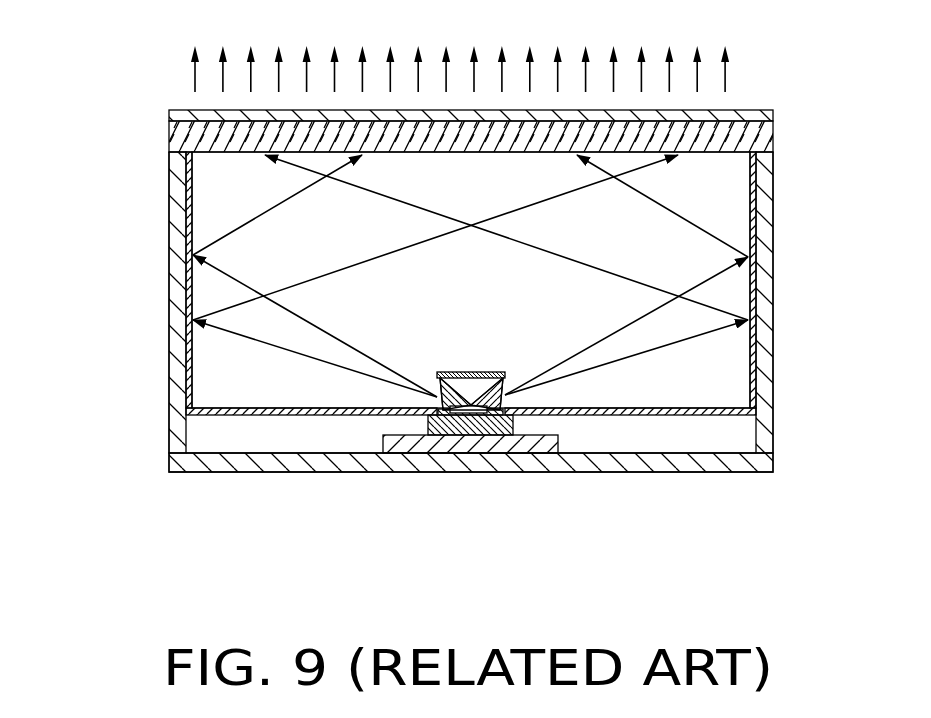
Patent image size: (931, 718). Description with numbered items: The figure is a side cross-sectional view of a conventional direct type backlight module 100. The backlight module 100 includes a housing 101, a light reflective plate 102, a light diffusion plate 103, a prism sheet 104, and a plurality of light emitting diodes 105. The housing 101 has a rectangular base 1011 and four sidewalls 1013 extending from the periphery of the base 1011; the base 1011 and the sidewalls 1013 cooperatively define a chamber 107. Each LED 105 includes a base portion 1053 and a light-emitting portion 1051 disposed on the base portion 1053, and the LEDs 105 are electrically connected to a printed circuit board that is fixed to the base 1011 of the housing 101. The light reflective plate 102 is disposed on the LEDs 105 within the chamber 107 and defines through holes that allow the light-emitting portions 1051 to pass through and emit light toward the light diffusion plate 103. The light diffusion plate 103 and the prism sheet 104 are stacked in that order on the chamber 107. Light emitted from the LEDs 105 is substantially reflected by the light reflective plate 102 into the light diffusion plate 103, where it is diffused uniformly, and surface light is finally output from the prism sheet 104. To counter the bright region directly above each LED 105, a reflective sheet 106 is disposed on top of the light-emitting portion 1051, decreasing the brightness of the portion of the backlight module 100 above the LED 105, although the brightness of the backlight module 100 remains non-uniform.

The backlight module 100 is at (146, 76).
The housing 101 is at (403, 330).
The base 1011 is at (430, 481).
The sidewalls 1013 is at (177, 353).
The light reflective plate 102 is at (683, 408).
The light diffusion plate 103 is at (766, 130).
The prism sheet 104 is at (737, 118).
The light emitting diode 105 is at (457, 494).
The light-emitting portion 1051 is at (437, 400).
The base portion 1053 is at (460, 427).
The reflective sheet 106 is at (458, 372).
The chamber 107 is at (720, 207).